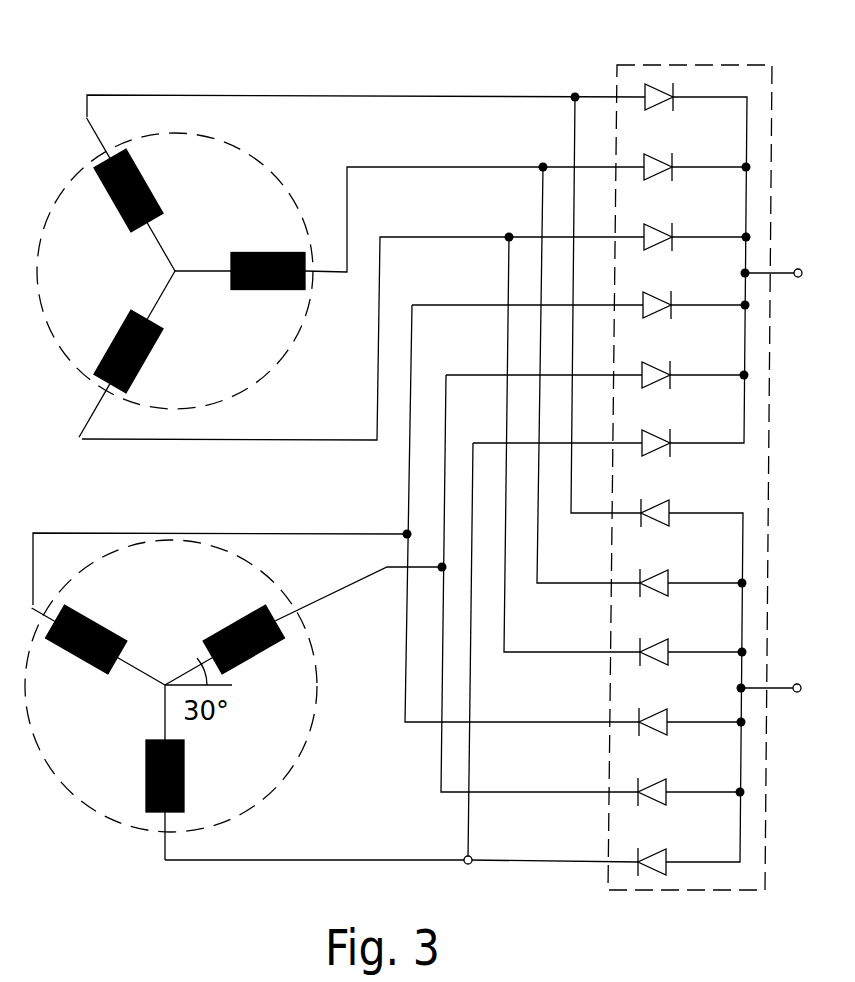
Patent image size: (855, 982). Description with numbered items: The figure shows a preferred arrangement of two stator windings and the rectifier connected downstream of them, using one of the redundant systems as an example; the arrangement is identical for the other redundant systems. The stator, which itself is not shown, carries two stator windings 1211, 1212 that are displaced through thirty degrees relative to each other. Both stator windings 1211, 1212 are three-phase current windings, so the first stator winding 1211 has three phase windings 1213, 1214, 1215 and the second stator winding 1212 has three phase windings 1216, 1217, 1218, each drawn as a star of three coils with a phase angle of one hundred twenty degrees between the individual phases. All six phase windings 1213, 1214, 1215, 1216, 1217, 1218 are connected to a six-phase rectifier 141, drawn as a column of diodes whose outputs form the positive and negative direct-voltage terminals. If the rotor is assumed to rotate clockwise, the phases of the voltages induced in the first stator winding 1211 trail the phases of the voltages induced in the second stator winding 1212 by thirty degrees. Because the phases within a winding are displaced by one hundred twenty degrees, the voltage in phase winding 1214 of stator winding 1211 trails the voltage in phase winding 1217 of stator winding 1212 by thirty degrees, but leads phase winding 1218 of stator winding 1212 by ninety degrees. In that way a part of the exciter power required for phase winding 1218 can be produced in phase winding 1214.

The six-phase rectifier 141 is at (708, 65).
The stator winding 1211 is at (89, 168).
The stator winding 1212 is at (121, 821).
The phase winding 1213 is at (149, 181).
The phase winding 1214 is at (257, 290).
The phase winding 1215 is at (116, 338).
The phase winding 1216 is at (108, 609).
The phase winding 1217 is at (240, 609).
The phase winding 1218 is at (148, 774).